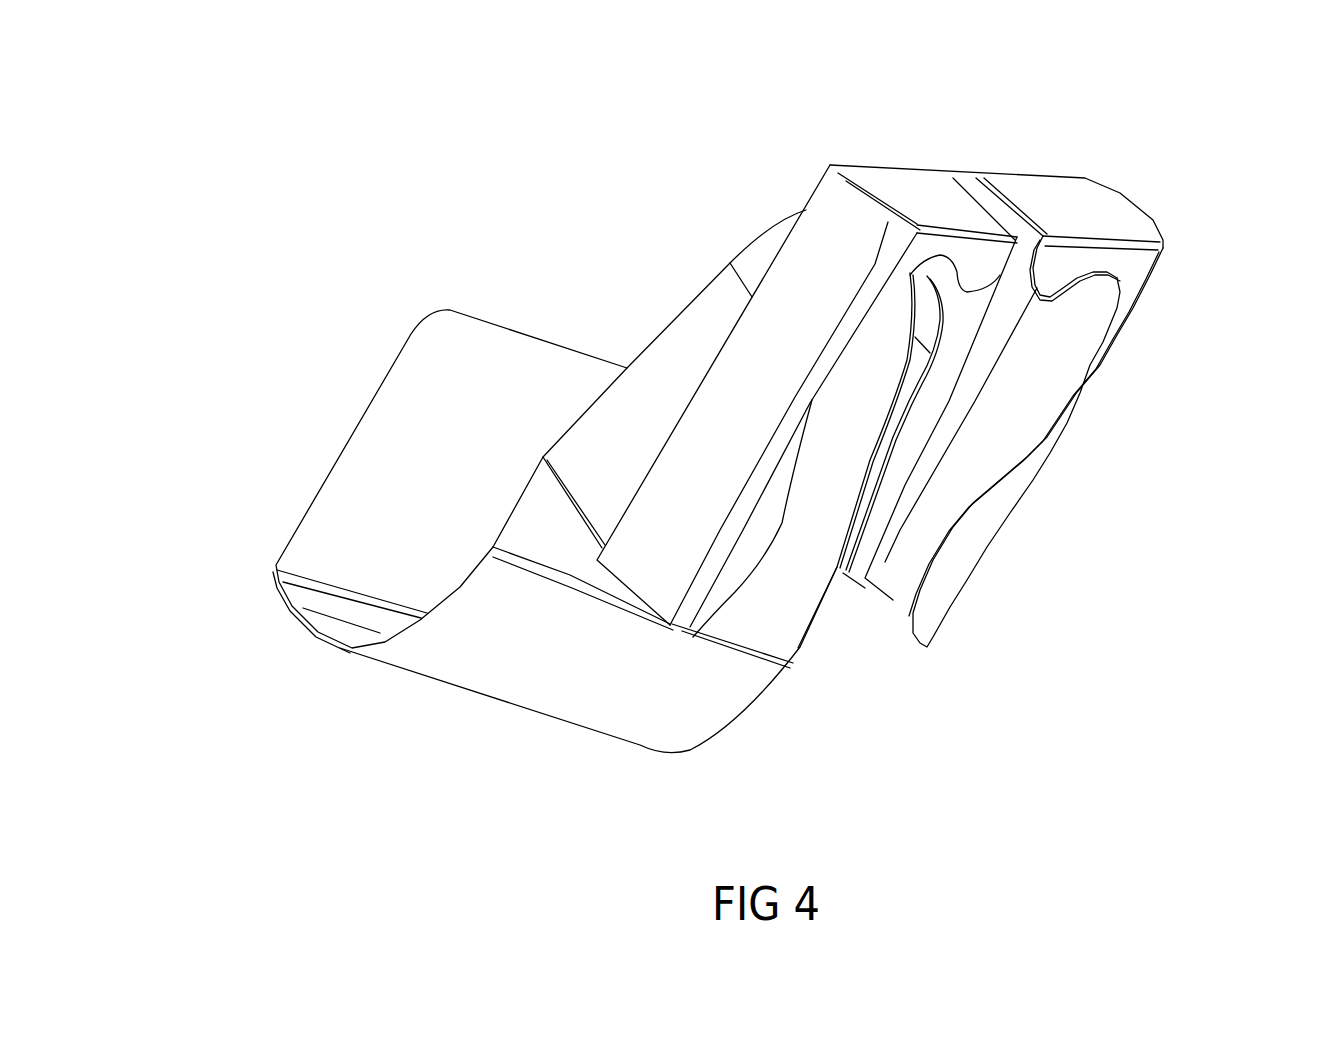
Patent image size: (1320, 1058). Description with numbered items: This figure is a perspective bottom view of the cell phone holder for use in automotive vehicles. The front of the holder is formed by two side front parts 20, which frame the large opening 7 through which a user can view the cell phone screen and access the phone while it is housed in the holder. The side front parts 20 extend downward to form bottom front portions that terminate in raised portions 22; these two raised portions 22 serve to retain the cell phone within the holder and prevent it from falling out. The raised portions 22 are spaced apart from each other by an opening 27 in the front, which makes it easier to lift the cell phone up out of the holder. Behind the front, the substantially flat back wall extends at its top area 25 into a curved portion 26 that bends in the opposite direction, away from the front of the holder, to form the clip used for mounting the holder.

The opening 7 is at (1080, 388).
The side front parts 20 is at (735, 583).
The raised portions 22 is at (970, 285).
The top area 25 is at (798, 648).
The curved portion 26 is at (317, 630).
The opening 27 is at (970, 183).